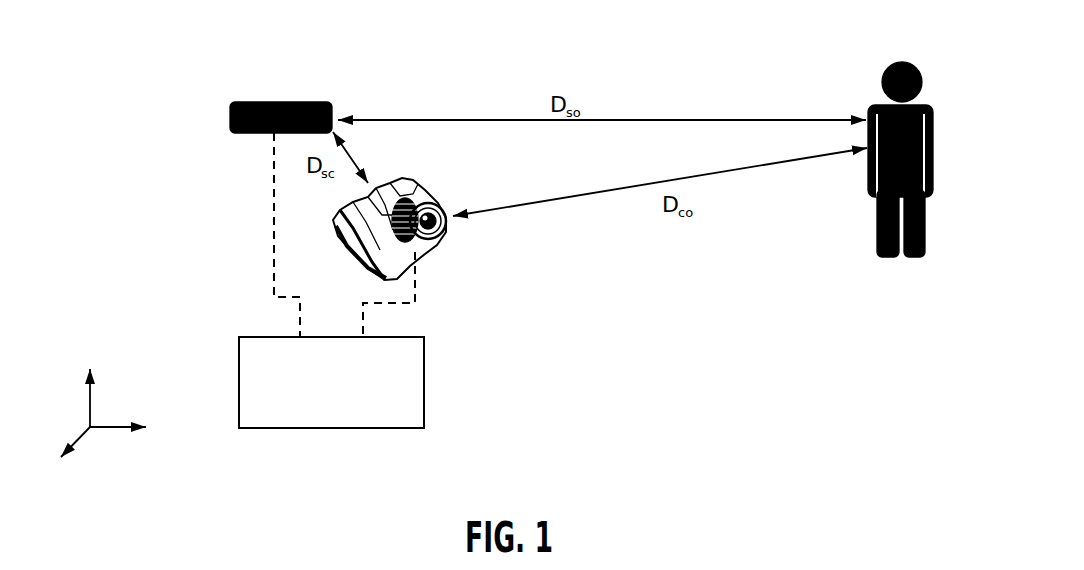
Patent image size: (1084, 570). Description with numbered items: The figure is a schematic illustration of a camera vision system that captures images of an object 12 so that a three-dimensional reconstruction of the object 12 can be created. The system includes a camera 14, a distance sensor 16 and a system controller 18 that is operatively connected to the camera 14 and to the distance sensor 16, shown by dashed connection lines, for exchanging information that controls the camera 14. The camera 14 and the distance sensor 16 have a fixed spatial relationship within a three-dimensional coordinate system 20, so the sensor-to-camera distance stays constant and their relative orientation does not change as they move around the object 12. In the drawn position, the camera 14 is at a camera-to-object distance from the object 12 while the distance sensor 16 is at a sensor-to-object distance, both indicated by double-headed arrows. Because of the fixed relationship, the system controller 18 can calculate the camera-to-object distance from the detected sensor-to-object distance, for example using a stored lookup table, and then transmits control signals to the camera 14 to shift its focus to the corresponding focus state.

The object 12 is at (933, 112).
The camera 14 is at (446, 208).
The distance sensor 16 is at (270, 103).
The system controller 18 is at (424, 377).
The three-dimensional coordinate system 20 is at (92, 400).